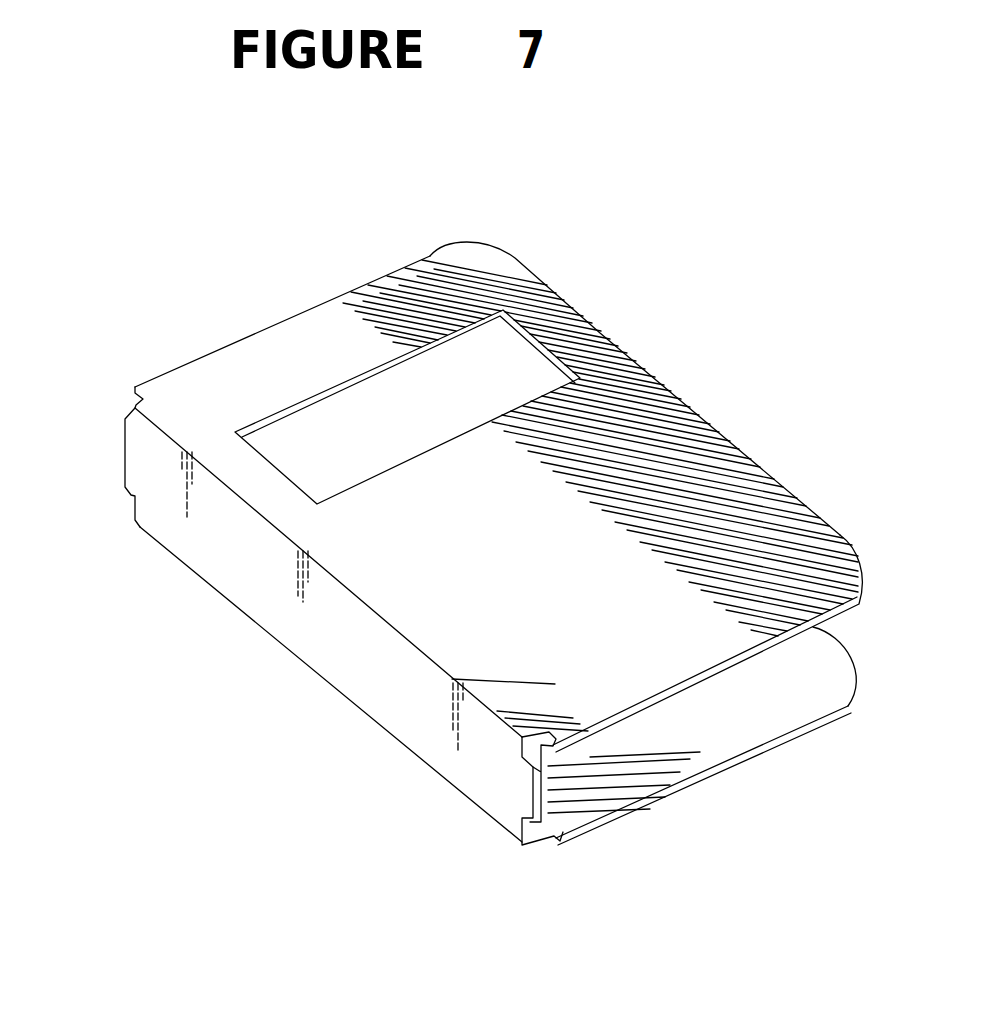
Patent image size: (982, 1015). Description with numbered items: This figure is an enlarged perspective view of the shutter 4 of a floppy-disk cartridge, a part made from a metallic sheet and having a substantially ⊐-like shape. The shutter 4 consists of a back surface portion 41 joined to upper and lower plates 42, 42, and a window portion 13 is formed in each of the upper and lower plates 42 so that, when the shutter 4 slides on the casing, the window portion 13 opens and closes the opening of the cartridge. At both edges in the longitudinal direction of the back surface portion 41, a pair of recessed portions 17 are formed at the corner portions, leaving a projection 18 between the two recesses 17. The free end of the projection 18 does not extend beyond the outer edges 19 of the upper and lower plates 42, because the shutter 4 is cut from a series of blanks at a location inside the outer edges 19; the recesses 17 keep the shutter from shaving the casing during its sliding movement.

The shutter 4 is at (613, 338).
The window portion 13 is at (292, 426).
The recessed portion 17 is at (120, 508).
The projection 18 is at (125, 455).
The outer edge 19 is at (275, 323).
The back surface portion 41 is at (355, 665).
The upper and lower plates 42 is at (215, 375).